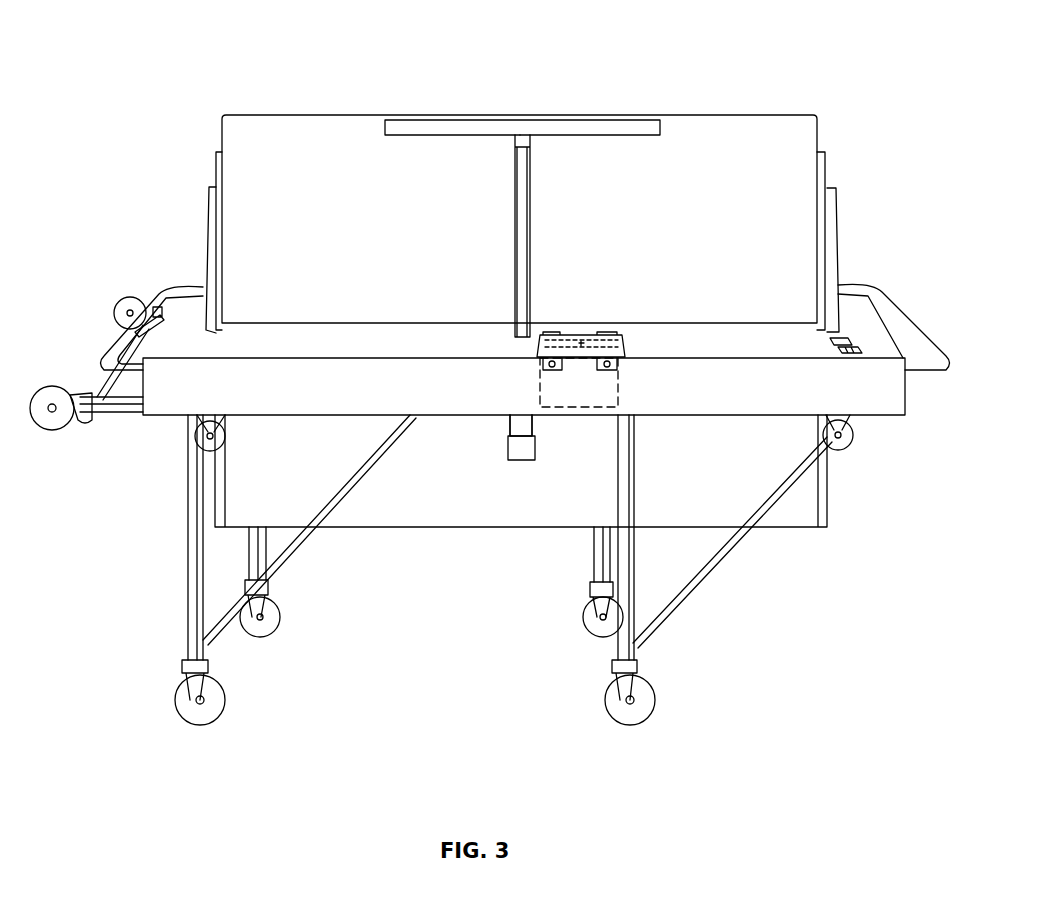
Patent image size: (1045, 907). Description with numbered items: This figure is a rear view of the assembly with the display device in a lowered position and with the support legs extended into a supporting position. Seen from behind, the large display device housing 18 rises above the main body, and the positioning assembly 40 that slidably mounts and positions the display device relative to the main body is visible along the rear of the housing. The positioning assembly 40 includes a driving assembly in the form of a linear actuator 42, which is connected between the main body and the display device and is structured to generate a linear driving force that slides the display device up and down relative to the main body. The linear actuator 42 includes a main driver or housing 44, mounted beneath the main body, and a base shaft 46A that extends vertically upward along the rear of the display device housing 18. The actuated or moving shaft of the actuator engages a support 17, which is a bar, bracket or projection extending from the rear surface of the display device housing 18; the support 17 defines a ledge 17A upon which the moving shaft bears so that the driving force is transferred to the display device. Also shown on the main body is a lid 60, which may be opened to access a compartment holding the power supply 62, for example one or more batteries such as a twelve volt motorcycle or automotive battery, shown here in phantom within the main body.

The support 17 is at (440, 130).
The ledge 17A is at (500, 137).
The display device housing 18 is at (307, 137).
The positioning assembly 40 is at (200, 160).
The linear actuator 42 is at (522, 466).
The main driver or housing 44 is at (505, 448).
The base shaft 46A is at (525, 262).
The lid 60 is at (625, 338).
The power supply 62 is at (590, 397).